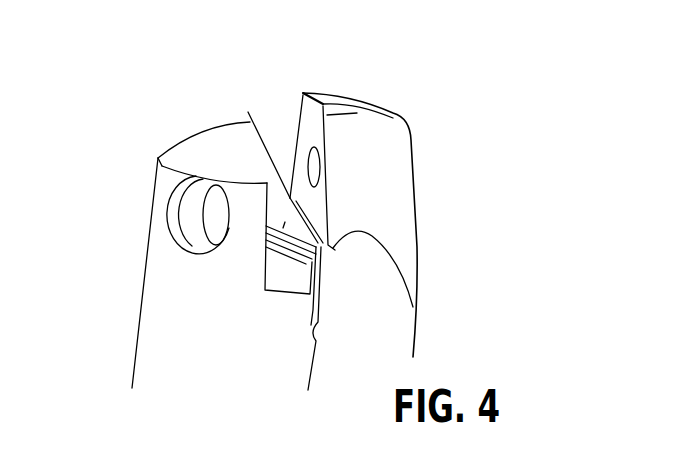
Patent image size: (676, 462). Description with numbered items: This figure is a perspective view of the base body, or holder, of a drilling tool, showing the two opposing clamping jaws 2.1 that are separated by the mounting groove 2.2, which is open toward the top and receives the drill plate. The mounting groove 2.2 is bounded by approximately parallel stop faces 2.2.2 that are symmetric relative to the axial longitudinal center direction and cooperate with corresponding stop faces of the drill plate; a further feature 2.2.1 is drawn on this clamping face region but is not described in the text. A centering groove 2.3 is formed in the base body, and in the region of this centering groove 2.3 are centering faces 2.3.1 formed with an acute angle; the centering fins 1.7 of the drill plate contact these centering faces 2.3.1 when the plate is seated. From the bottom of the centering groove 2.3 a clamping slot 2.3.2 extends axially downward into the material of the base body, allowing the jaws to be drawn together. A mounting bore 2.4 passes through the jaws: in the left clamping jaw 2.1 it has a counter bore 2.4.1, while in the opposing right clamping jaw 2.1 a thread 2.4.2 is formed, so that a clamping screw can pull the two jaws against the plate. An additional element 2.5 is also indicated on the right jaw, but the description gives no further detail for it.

The centering fins 1.7 is at (22, 12).
The clamping jaw 2.1 is at (217, 150).
The mounting groove 2.2 is at (285, 224).
The pocket with grooves 2.2.1 is at (277, 278).
The stop faces 2.2.2 is at (310, 120).
The centering groove 2.3 is at (248, 113).
The centering faces 2.3.1 is at (330, 232).
The clamping slot 2.3.2 is at (317, 305).
The mounting bore 2.4 is at (185, 215).
The counter bore 2.4.1 is at (186, 235).
The thread 2.4.2 is at (305, 162).
The arched bore 2.5 is at (372, 337).